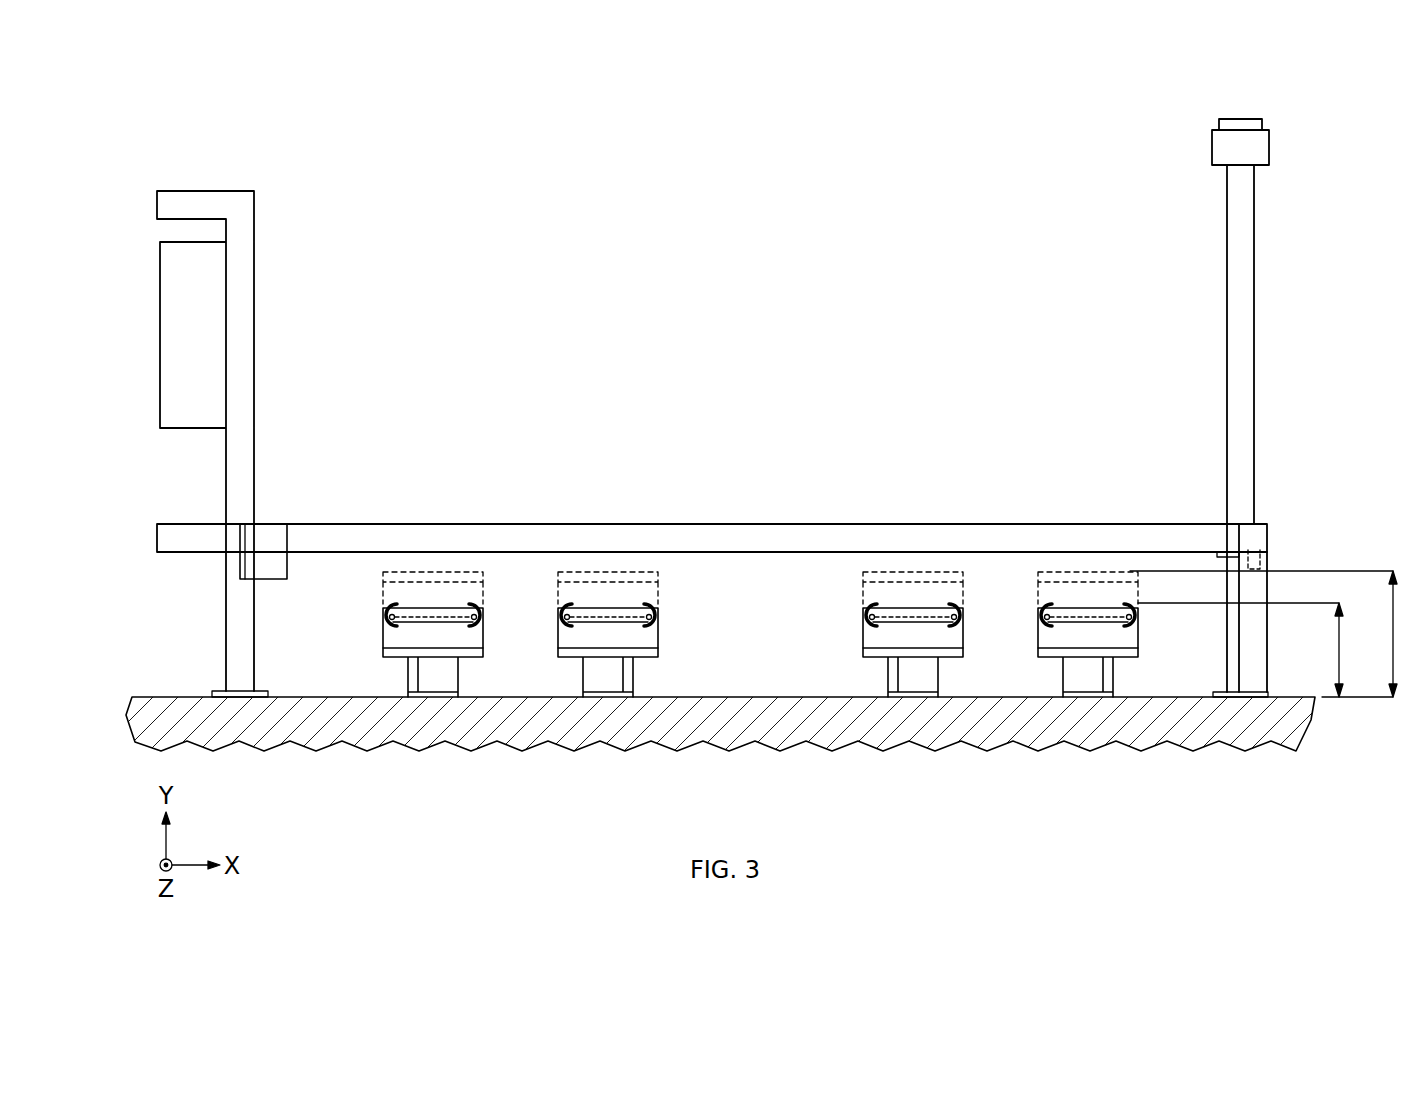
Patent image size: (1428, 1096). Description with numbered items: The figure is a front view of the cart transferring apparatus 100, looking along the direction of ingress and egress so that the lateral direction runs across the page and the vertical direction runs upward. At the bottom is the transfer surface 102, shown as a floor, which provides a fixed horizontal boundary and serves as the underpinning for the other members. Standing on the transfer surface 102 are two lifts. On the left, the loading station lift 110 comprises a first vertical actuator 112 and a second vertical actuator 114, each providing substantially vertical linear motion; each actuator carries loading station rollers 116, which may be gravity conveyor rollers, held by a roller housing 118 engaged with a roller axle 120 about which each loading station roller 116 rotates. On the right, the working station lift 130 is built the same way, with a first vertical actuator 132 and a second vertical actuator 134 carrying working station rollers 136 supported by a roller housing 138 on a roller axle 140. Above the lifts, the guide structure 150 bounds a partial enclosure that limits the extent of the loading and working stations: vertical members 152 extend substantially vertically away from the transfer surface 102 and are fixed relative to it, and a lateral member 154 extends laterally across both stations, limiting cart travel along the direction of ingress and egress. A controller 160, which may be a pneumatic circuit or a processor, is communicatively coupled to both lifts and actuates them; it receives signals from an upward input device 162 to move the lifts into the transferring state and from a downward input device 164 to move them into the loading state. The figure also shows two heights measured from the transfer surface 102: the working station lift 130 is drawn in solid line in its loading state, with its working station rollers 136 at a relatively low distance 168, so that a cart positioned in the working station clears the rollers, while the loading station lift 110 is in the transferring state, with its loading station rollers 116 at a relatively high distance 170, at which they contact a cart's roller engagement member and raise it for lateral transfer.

The cart transferring apparatus 100 is at (838, 152).
The transfer surface 102 is at (296, 695).
The loading station lift 110 is at (522, 550).
The first vertical actuator 112 is at (612, 677).
The second vertical actuator 114 is at (425, 677).
The loading station rollers 116 is at (480, 570).
The roller housing 118 is at (488, 650).
The roller axle 120 is at (467, 572).
The working station lift 130 is at (1003, 550).
The first vertical actuator 132 is at (905, 677).
The second vertical actuator 134 is at (1092, 677).
The working station rollers 136 is at (958, 570).
The roller housing 138 is at (968, 650).
The roller axle 140 is at (946, 572).
The guide structure 150 is at (803, 462).
The vertical members 152 is at (226, 633).
The lateral member 154 is at (683, 527).
The controller 160 is at (160, 321).
The upward input device 162 is at (1240, 118).
The downward input device 164 is at (1258, 548).
The relatively low distance 168 is at (1249, 650).
The relatively high distance 170 is at (1271, 634).